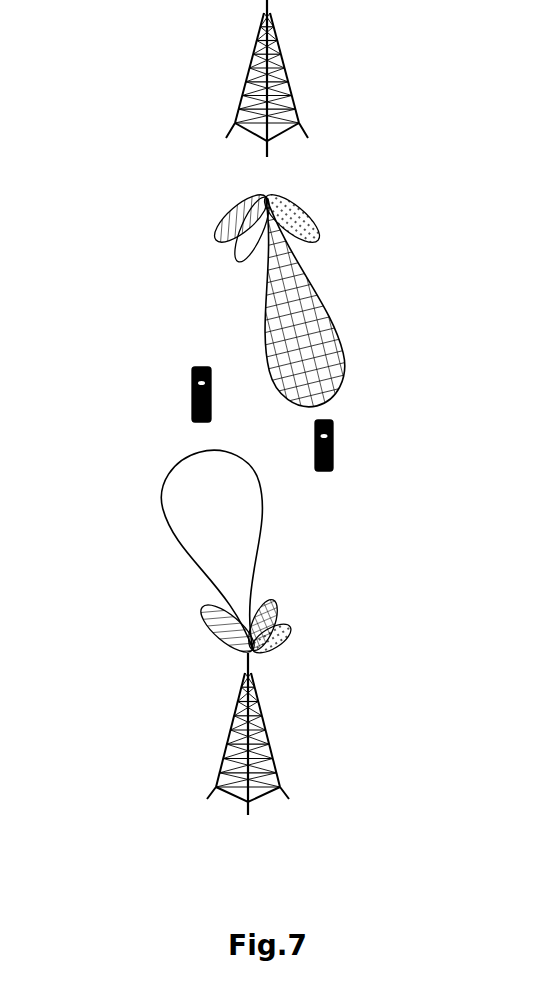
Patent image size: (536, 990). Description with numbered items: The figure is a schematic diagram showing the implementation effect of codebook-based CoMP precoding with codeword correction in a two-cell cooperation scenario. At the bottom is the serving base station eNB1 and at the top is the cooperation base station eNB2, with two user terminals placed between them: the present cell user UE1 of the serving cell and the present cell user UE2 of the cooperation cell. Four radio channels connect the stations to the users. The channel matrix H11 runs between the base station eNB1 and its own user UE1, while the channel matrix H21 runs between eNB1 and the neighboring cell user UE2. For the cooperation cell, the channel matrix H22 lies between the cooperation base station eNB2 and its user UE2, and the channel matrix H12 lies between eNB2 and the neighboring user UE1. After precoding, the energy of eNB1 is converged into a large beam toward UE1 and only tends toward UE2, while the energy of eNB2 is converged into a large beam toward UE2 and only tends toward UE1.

The serving base station eNB1 is at (245, 720).
The cooperation base station eNB2 is at (267, 133).
The present cell user UE1 is at (174, 394).
The present cell user UE2 is at (352, 445).
The channel matrix H11 is at (253, 650).
The channel matrix H12 is at (266, 197).
The channel matrix H21 is at (253, 650).
The channel matrix H22 is at (266, 197).